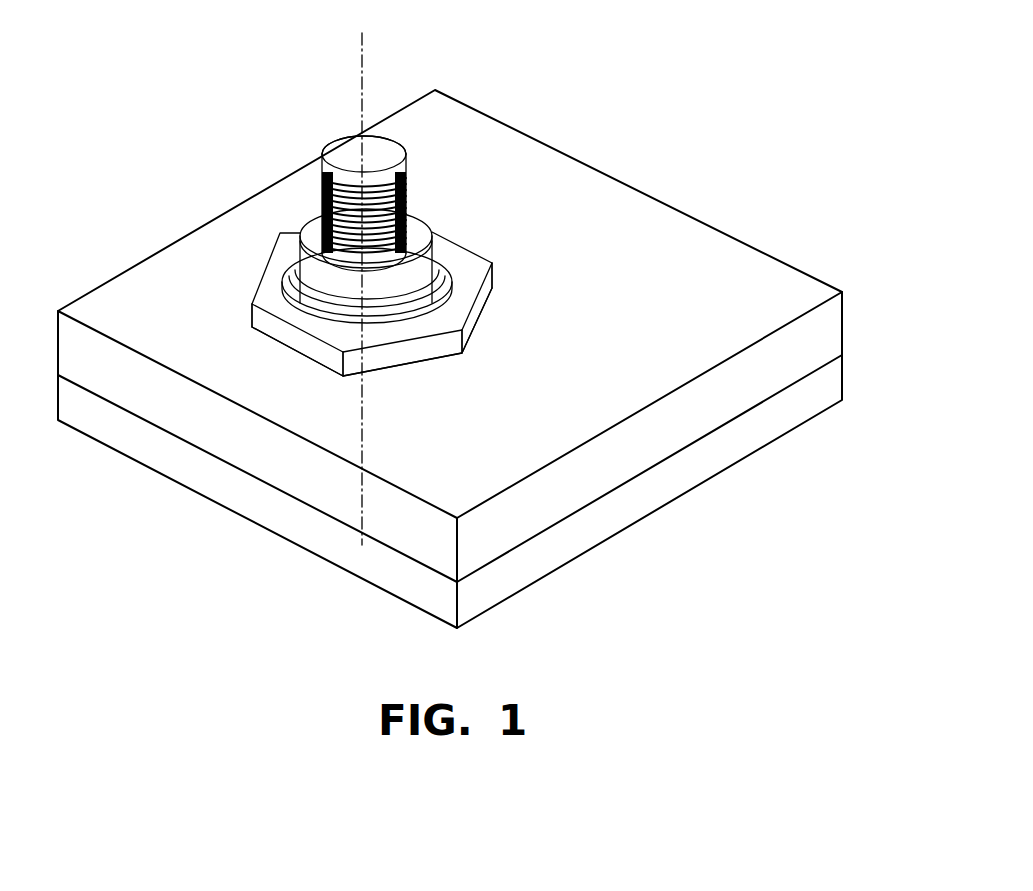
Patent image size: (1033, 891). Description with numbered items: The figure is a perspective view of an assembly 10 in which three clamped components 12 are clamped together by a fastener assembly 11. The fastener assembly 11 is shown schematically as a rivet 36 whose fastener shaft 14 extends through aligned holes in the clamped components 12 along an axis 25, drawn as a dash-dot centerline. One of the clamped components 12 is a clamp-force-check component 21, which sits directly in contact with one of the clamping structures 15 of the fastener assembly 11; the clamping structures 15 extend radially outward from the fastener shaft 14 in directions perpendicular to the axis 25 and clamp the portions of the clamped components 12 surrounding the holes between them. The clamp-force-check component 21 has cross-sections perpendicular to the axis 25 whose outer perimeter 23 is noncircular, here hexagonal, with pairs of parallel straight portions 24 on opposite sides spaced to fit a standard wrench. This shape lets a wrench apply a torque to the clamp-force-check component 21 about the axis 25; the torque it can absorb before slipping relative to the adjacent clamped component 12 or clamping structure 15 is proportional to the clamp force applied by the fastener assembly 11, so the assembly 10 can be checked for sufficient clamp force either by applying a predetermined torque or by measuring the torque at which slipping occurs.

The assembly 10 is at (630, 214).
The fastener assembly 11 is at (470, 262).
The clamped components 12 is at (490, 223).
The fastener shaft 14 is at (320, 175).
The clamping structures 15 is at (297, 253).
The clamp-force-check component 21 is at (480, 238).
The outer perimeter 23 is at (293, 228).
The straight portions 24 is at (290, 237).
The axis 25 is at (368, 78).
The rivet 36 is at (343, 147).